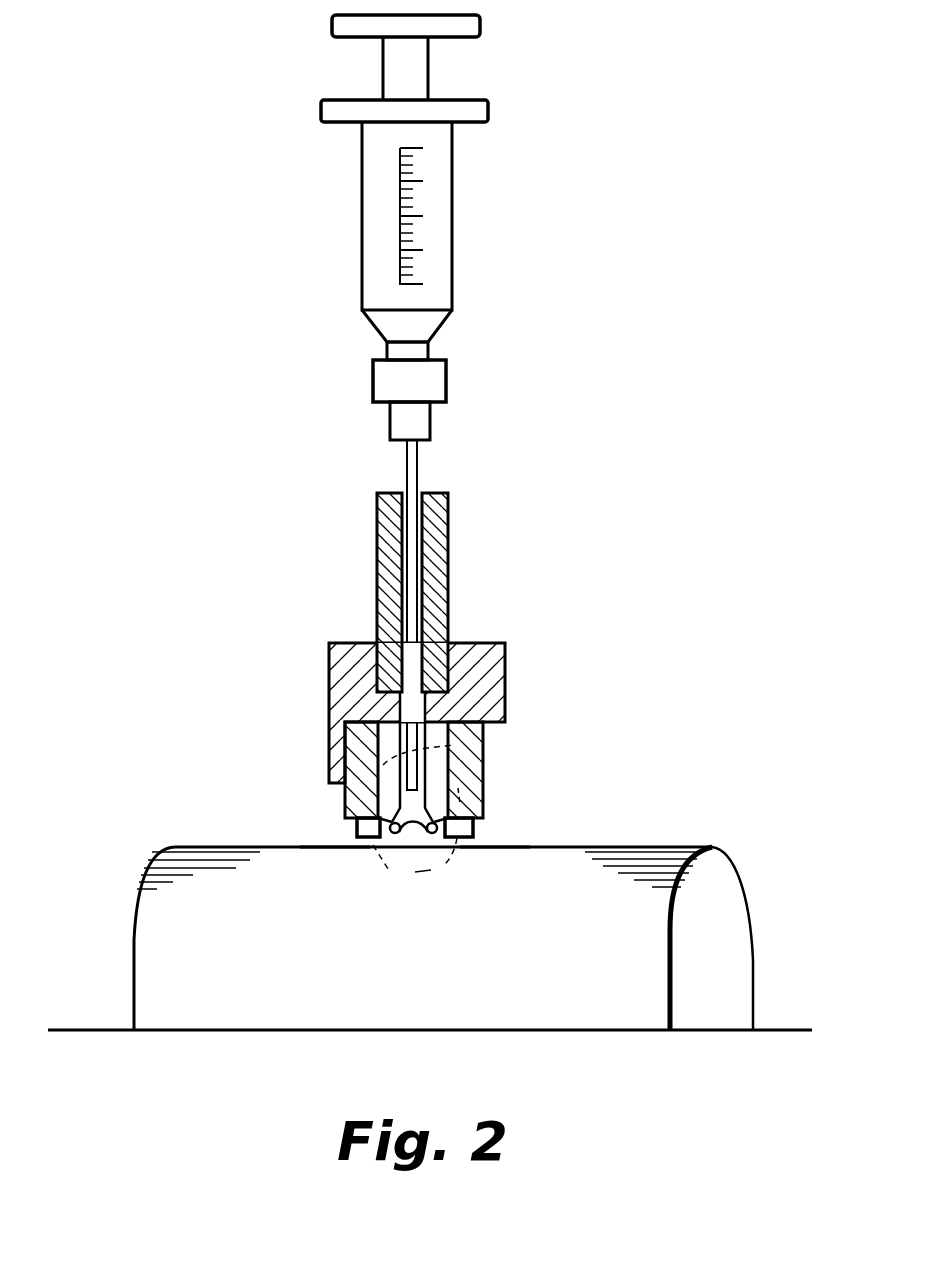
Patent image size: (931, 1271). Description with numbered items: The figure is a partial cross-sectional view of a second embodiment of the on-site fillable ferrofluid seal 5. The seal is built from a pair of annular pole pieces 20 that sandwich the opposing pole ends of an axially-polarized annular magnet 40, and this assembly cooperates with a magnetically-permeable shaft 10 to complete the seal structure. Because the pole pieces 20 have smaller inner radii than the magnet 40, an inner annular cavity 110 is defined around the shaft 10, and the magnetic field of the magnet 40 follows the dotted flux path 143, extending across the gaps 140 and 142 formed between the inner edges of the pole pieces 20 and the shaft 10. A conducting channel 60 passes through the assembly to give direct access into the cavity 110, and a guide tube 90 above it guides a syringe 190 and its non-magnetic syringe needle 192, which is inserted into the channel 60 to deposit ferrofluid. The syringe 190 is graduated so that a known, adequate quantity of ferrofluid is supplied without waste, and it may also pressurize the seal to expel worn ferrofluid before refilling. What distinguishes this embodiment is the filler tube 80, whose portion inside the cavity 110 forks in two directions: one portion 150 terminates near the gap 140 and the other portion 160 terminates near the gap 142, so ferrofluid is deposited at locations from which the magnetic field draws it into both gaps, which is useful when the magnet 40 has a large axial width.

The fillable ferrofluid seal 5 is at (138, 280).
The shaft 10 is at (658, 908).
The pole pieces 20 is at (360, 790).
The magnet 40 is at (390, 744).
The conducting channel 60 is at (420, 625).
The filler tube 80 is at (430, 753).
The guide tube 90 is at (432, 570).
The inner annular cavity 110 is at (412, 832).
The gap 140 is at (365, 842).
The gap 142 is at (463, 842).
The magnetic flux path 143 is at (423, 875).
The portion of filler tube 150 is at (357, 823).
The portion of filler tube 160 is at (480, 815).
The syringe 190 is at (440, 215).
The syringe needle 192 is at (412, 602).